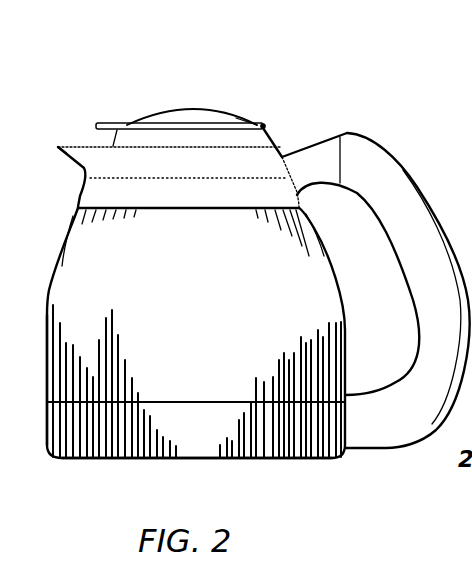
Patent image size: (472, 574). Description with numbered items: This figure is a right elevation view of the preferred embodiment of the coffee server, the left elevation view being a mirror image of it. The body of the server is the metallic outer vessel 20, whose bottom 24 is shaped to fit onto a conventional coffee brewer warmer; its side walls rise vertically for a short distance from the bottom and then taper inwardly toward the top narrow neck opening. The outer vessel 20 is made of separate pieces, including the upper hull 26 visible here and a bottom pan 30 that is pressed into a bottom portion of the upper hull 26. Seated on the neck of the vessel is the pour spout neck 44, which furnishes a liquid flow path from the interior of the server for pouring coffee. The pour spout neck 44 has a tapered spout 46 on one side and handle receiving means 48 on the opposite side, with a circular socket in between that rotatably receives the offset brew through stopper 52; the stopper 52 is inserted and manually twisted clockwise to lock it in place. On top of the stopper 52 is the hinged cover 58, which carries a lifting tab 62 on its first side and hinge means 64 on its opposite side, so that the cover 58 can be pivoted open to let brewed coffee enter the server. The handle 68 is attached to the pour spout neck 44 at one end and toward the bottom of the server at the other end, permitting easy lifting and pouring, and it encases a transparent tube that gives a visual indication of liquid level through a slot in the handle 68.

The metallic outer vessel 20 is at (71, 219).
The bottom 24 is at (110, 460).
The upper hull 26 is at (47, 385).
The bottom pan 30 is at (256, 460).
The pour spout neck 44 is at (82, 190).
The tapered spout 46 is at (60, 145).
The handle receiving means 48 is at (349, 133).
The offset brew through stopper 52 is at (186, 98).
The hinged cover 58 is at (237, 117).
The lifting tab 62 is at (110, 124).
The hinge means 64 is at (264, 126).
The handle 68 is at (404, 170).